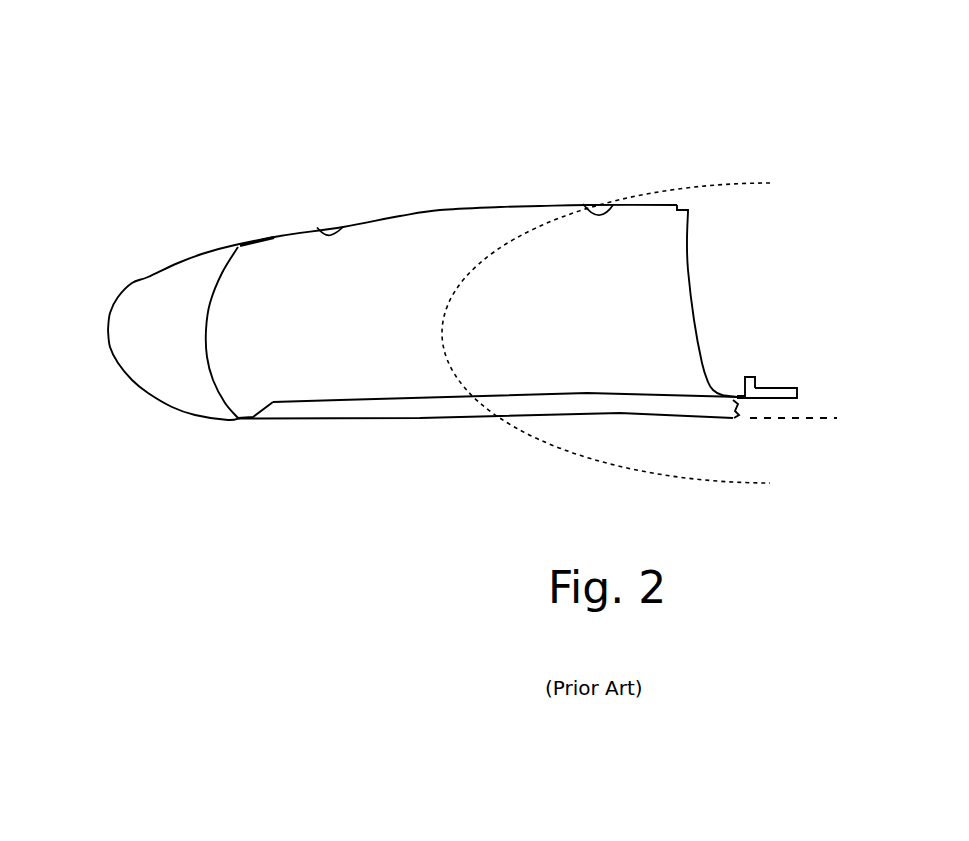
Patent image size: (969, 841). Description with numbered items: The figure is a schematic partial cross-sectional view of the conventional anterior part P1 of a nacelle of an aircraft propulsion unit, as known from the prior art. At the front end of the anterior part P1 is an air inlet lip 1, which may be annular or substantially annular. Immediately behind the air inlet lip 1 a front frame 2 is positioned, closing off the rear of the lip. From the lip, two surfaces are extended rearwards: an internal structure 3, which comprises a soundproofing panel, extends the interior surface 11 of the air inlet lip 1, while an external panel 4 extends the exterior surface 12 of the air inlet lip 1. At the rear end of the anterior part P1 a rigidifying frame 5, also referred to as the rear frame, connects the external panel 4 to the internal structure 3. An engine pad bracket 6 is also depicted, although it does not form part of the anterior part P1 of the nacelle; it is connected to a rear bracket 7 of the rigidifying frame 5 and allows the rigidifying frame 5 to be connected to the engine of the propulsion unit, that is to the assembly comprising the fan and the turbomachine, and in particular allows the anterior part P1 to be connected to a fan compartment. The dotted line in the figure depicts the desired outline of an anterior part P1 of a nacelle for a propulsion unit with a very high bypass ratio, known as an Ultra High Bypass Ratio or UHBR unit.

The anterior part P1 is at (130, 137).
The air inlet lip 1 is at (148, 277).
The exterior surface 12 is at (213, 249).
The front frame 2 is at (207, 345).
The interior surface 11 is at (189, 413).
The internal structure 3 is at (409, 410).
The external panel 4 is at (485, 208).
The rigidifying frame 5 is at (699, 316).
The rear bracket 7 is at (745, 387).
The engine pad bracket 6 is at (781, 388).